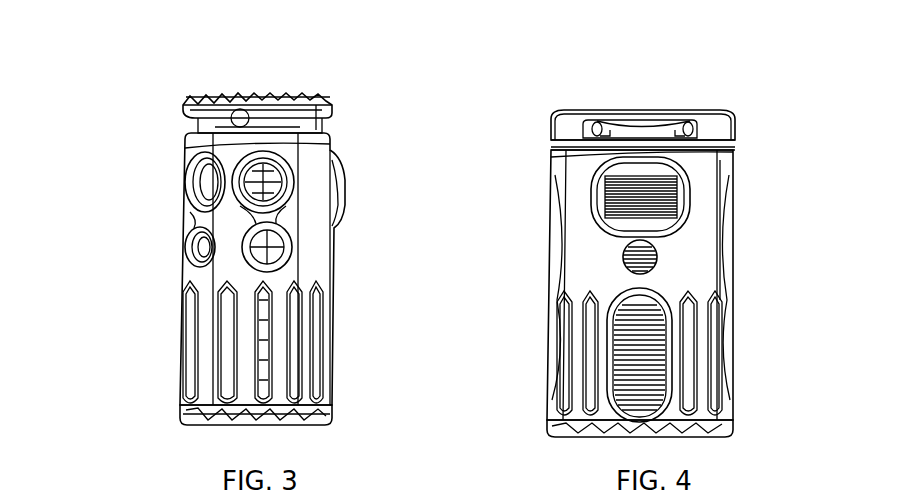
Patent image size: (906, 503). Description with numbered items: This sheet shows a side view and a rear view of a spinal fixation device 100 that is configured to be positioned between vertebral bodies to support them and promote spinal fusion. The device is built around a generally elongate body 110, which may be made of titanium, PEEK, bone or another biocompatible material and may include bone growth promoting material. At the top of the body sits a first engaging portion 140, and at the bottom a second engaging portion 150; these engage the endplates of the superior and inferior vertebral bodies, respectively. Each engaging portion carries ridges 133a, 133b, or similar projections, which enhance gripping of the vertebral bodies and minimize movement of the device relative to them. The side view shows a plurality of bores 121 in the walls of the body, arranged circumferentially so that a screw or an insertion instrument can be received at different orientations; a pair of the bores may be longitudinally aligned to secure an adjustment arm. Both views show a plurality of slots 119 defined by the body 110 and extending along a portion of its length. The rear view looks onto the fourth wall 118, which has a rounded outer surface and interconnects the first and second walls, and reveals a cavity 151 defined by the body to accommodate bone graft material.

In FIG. 3, the spinal fixation device 100 is at (130, 245).
In FIG. 4, the spinal fixation device 100 is at (490, 148).
In FIG. 3, the elongate body 110 is at (182, 292).
In FIG. 4, the elongate body 110 is at (585, 228).
In FIG. 4, the fourth wall 118 is at (703, 168).
In FIG. 3, the slots 119 is at (328, 373).
In FIG. 3, the bores 121 is at (297, 167).
In FIG. 3, the ridges 133a is at (310, 100).
In FIG. 3, the ridges 133b is at (307, 420).
In FIG. 3, the first engaging portion 140 is at (216, 102).
In FIG. 4, the first engaging portion 140 is at (703, 110).
In FIG. 3, the second engaging portion 150 is at (213, 423).
In FIG. 4, the second engaging portion 150 is at (703, 432).
In FIG. 4, the cavity 151 is at (665, 310).